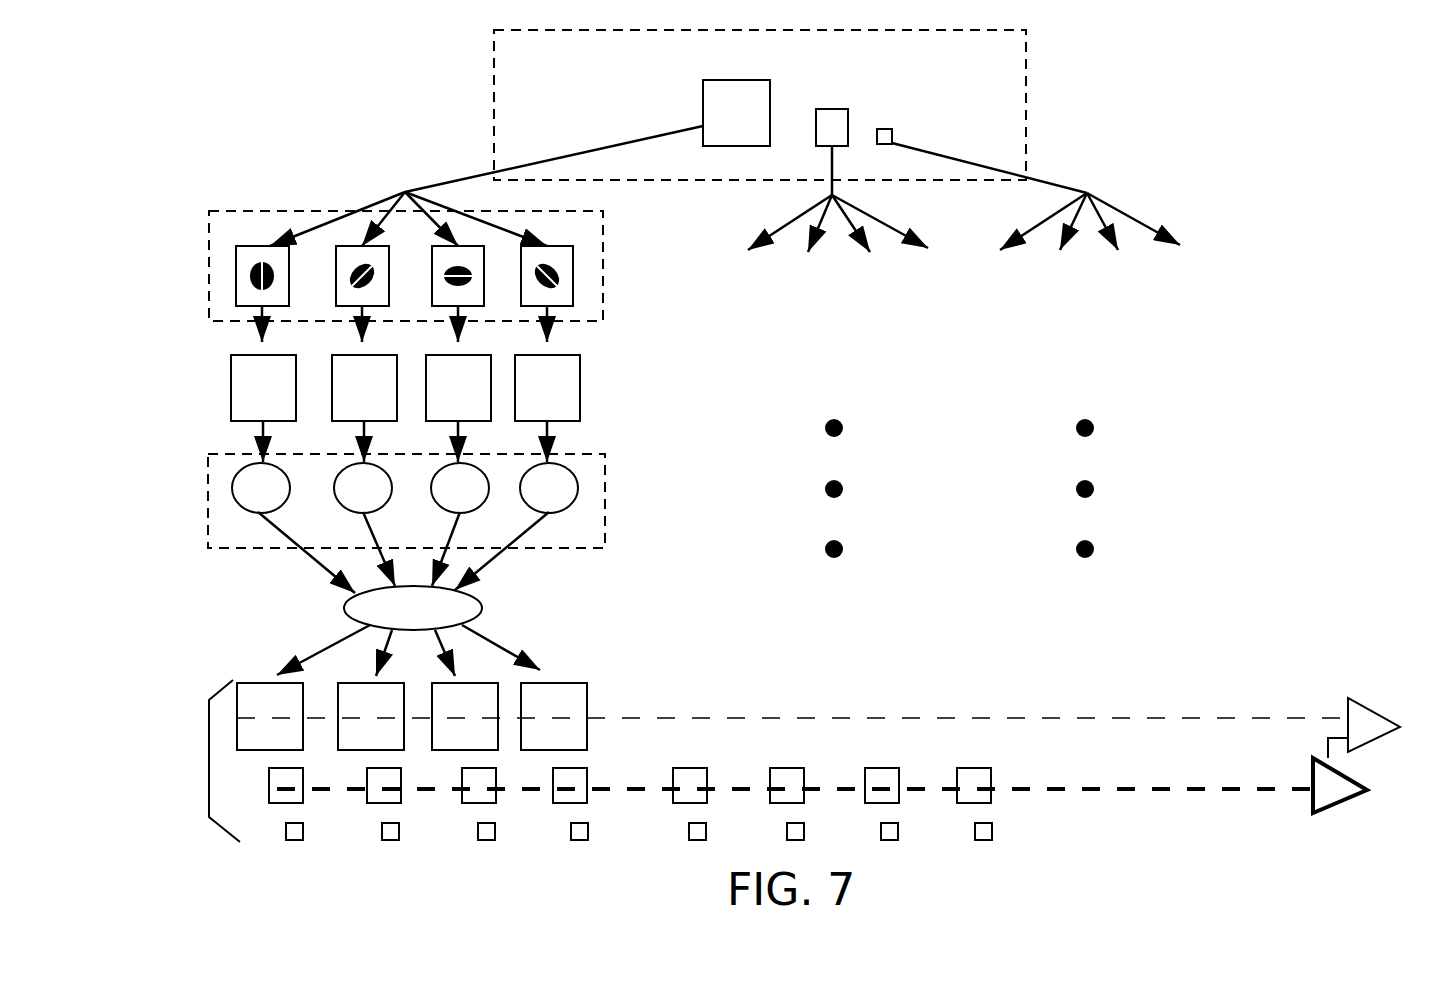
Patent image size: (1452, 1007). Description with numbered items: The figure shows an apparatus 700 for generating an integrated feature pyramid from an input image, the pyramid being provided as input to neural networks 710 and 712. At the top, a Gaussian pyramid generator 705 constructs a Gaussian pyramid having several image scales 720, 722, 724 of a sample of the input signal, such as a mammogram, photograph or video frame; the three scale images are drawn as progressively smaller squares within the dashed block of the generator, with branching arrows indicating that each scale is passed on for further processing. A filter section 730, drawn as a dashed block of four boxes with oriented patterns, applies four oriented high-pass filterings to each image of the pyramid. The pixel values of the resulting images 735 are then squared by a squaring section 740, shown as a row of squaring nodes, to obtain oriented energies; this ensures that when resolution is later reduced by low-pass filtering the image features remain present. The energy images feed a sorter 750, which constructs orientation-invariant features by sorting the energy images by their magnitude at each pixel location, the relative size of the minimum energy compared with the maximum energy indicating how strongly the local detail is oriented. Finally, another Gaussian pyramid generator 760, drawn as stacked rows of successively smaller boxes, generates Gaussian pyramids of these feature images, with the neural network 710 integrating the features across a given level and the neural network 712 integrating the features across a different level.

The apparatus 700 is at (243, 94).
The Gaussian pyramid generator 705 is at (528, 102).
The image scale 720 is at (703, 103).
The image scale 722 is at (832, 109).
The image scale 724 is at (885, 129).
The filter section 730 is at (228, 253).
The images 735 is at (230, 374).
The squaring section 740 is at (220, 488).
The sorter 750 is at (347, 602).
The Gaussian pyramid generator 760 is at (209, 735).
The neural network 712 is at (1358, 698).
The neural network 710 is at (1333, 808).